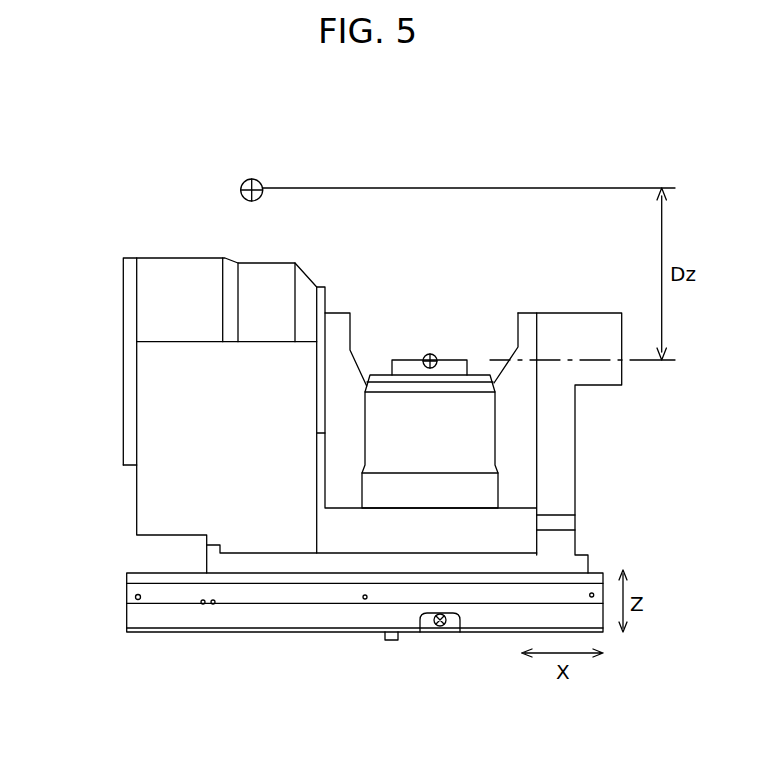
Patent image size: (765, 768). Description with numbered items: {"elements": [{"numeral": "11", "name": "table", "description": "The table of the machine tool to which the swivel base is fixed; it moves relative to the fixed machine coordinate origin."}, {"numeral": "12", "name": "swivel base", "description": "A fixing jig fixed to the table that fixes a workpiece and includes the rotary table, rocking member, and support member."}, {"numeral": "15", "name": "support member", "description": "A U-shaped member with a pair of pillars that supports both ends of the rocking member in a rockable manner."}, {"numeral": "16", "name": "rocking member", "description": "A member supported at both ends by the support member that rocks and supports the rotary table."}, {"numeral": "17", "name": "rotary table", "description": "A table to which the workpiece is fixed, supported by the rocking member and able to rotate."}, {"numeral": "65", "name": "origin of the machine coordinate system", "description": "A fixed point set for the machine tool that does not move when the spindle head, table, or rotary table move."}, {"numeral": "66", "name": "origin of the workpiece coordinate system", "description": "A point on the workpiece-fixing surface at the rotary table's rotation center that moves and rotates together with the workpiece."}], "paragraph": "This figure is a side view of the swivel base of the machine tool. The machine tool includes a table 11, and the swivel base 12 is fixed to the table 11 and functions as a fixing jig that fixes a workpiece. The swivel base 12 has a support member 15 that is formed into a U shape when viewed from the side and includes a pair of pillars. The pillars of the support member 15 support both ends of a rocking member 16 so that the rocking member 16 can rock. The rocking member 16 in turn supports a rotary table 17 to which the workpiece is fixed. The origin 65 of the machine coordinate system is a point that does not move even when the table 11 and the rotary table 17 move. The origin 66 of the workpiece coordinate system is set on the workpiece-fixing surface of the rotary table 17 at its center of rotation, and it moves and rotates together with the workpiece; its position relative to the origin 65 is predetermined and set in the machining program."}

The base 11 is at (140, 621).
The column 12 is at (155, 255).
The guide 15 is at (165, 501).
The spindle 16 is at (470, 443).
The spindle head 17 is at (457, 368).
The reference position 65 is at (241, 184).
The tool center position 66 is at (436, 355).